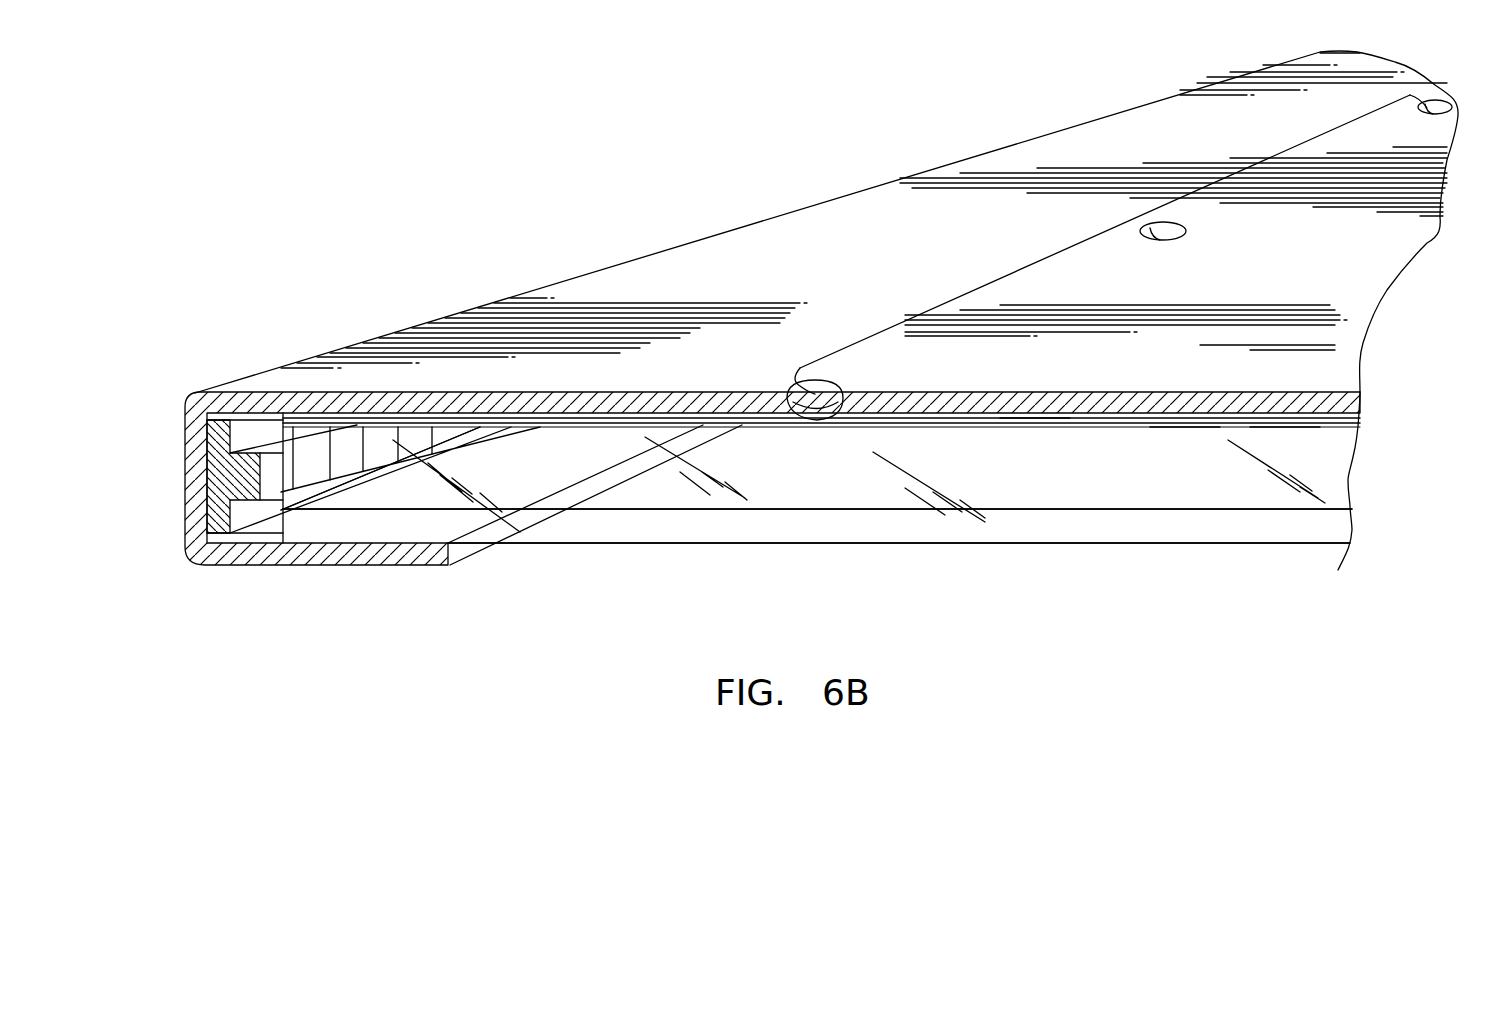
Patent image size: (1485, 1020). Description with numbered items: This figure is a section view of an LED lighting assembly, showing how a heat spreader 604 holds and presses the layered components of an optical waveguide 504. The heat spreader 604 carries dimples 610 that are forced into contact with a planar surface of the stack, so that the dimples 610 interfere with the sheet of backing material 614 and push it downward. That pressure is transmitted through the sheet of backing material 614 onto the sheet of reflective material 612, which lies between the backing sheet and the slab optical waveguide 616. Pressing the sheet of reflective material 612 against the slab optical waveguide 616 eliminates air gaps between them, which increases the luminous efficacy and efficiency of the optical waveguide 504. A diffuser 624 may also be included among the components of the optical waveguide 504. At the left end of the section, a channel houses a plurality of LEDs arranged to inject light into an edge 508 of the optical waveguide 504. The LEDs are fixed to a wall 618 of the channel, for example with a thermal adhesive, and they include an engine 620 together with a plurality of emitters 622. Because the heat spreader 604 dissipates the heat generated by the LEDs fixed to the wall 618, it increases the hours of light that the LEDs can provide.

The heat spreader 604 is at (602, 236).
The dimples 610 is at (1090, 238).
The optical waveguide 504 is at (1368, 413).
The edge 508 is at (224, 457).
The wall 618 is at (276, 472).
The engine 620 is at (206, 510).
The plurality of emitters 622 is at (352, 452).
The diffuser 624 is at (762, 545).
The slab optical waveguide 616 is at (879, 512).
The sheet of backing material 614 is at (1185, 428).
The sheet of reflective material 612 is at (1285, 428).